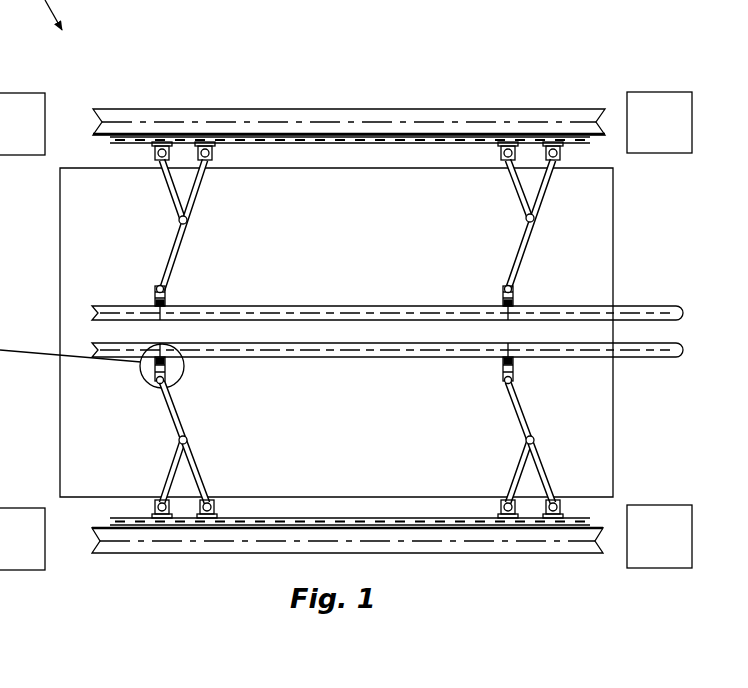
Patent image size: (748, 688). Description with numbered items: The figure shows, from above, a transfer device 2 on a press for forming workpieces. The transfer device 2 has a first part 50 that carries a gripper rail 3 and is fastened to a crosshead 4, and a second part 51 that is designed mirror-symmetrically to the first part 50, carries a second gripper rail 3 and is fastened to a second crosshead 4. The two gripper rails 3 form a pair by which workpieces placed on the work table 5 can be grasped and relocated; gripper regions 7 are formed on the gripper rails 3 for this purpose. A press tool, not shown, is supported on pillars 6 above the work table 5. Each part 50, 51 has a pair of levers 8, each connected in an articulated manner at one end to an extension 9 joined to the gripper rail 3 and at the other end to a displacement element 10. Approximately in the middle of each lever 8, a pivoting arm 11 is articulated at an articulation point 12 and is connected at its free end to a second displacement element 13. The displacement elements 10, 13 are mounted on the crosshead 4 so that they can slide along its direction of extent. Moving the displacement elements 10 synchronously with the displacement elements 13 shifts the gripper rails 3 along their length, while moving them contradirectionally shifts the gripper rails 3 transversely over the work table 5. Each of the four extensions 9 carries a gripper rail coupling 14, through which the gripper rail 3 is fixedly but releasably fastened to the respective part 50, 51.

The transfer device 2 is at (714, 325).
The gripper rail 3 is at (645, 306).
The crosshead 4 is at (462, 108).
The work table 5 is at (612, 478).
The pillar 6 is at (658, 100).
The gripper region 7 is at (298, 320).
The lever 8 is at (155, 250).
The extension 9 is at (178, 296).
The displacement element 10 is at (208, 150).
The pivoting arm 11 is at (170, 192).
The articulation point 12 is at (196, 222).
The second displacement element 13 is at (162, 150).
The gripper rail coupling 14 is at (140, 298).
The first part 50 is at (590, 212).
The second part 51 is at (584, 430).